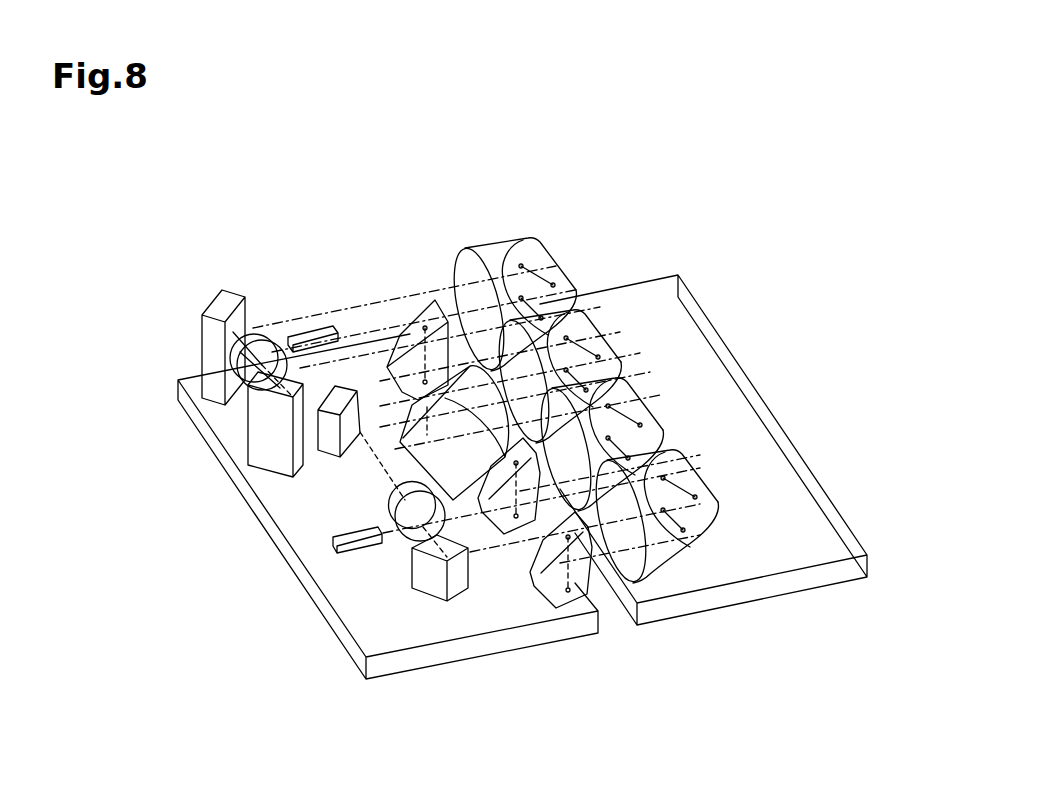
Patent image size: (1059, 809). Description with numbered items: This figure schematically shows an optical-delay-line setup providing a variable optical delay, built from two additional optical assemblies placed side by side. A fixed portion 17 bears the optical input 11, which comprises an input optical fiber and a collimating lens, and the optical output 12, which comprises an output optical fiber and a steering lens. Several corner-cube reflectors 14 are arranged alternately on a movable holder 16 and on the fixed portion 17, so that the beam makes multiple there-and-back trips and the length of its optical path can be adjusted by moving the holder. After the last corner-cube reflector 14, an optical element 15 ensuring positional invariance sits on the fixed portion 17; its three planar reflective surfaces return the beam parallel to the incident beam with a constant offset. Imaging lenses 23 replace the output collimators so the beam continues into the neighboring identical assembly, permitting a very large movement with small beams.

The optical input 11 is at (317, 330).
The optical output 12 is at (333, 543).
The corner-cube reflector 14 is at (542, 258).
The optical element ensuring positional invariance 15 is at (430, 300).
The movable holder 16 is at (705, 312).
The fixed portion 17 is at (335, 612).
The imaging lenses 23 is at (390, 502).